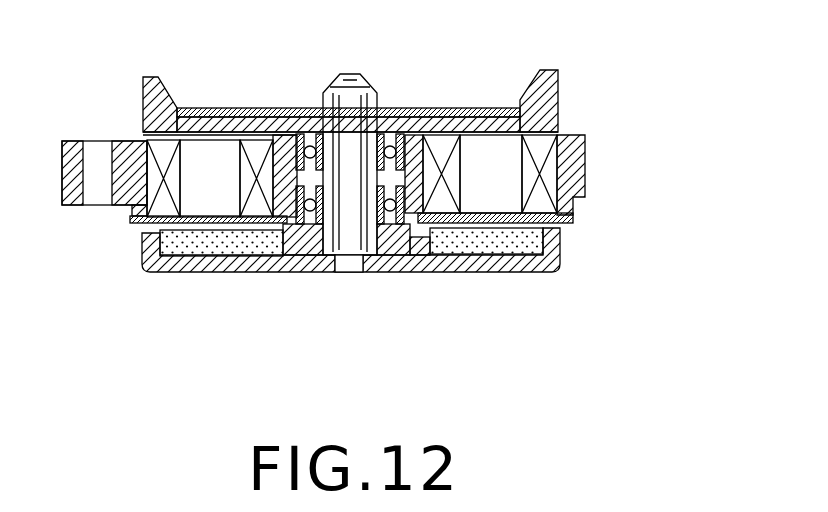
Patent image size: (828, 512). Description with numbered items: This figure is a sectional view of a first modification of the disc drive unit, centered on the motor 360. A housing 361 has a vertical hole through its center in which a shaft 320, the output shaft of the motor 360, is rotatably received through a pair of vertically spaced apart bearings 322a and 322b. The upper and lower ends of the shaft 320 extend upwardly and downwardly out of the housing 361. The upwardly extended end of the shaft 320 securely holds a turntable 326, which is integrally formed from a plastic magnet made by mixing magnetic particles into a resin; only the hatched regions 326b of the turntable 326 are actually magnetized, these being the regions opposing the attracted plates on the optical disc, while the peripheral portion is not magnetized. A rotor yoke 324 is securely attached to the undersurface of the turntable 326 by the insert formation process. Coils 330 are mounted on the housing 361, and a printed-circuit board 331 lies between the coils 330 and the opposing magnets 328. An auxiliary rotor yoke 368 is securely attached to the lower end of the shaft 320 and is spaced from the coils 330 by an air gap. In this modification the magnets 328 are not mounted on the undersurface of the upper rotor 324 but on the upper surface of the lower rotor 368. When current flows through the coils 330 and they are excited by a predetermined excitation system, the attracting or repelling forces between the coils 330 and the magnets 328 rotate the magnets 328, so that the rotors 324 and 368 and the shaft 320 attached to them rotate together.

The shaft 320 is at (357, 73).
The bearing 322a is at (288, 228).
The bearing 322b is at (297, 134).
The rotor yoke 324 is at (492, 108).
The turntable 326 is at (558, 92).
The hatched regions 326b is at (452, 108).
The magnets 328 is at (557, 238).
The coils 330 is at (150, 200).
The printed-circuit board 331 is at (142, 223).
The motor 360 is at (592, 147).
The housing 361 is at (122, 141).
The auxiliary rotor yoke 368 is at (560, 258).